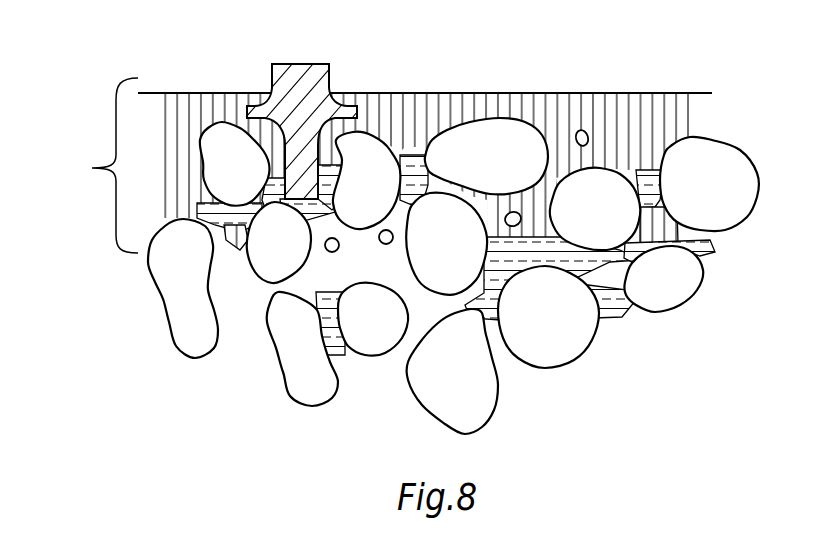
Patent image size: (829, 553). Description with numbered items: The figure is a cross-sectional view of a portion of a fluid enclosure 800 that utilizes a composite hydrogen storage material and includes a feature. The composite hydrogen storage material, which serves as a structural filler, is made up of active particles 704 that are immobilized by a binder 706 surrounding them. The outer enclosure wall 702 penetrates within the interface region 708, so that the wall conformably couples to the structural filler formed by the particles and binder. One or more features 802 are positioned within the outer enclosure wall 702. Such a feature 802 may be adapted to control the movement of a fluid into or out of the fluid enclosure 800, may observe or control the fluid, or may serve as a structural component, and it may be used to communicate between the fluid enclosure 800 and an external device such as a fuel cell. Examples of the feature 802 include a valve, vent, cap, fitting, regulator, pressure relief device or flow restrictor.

The outer enclosure wall 702 is at (698, 114).
The active particles 704 is at (737, 215).
The binder 706 is at (604, 306).
The interface region 708 is at (96, 165).
The fluid enclosure 800 is at (704, 46).
The feature 802 is at (301, 63).